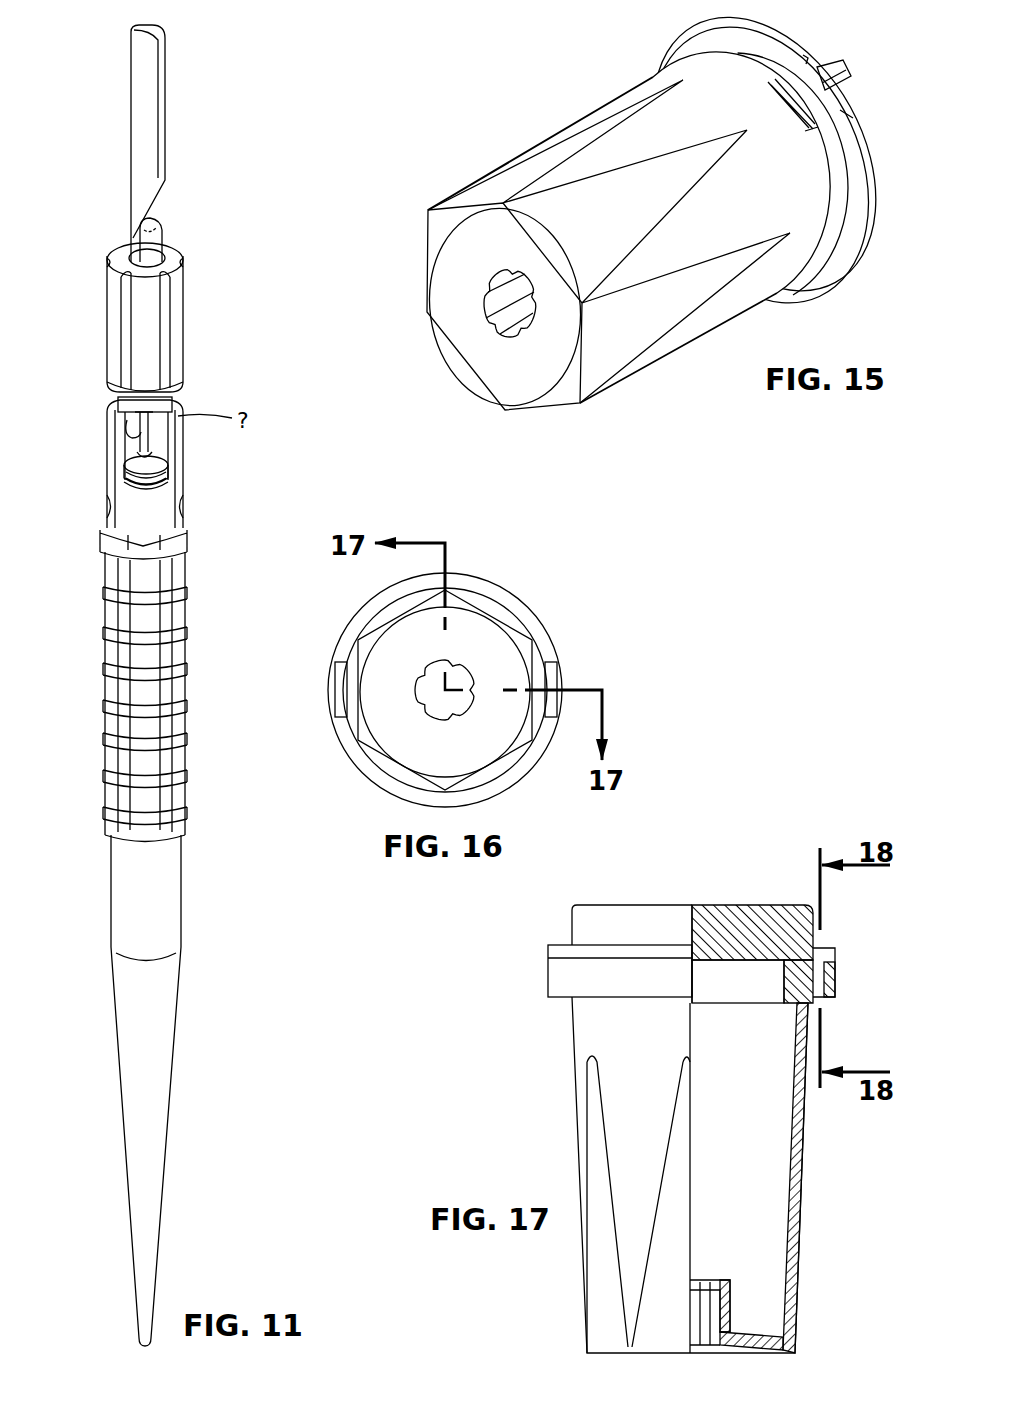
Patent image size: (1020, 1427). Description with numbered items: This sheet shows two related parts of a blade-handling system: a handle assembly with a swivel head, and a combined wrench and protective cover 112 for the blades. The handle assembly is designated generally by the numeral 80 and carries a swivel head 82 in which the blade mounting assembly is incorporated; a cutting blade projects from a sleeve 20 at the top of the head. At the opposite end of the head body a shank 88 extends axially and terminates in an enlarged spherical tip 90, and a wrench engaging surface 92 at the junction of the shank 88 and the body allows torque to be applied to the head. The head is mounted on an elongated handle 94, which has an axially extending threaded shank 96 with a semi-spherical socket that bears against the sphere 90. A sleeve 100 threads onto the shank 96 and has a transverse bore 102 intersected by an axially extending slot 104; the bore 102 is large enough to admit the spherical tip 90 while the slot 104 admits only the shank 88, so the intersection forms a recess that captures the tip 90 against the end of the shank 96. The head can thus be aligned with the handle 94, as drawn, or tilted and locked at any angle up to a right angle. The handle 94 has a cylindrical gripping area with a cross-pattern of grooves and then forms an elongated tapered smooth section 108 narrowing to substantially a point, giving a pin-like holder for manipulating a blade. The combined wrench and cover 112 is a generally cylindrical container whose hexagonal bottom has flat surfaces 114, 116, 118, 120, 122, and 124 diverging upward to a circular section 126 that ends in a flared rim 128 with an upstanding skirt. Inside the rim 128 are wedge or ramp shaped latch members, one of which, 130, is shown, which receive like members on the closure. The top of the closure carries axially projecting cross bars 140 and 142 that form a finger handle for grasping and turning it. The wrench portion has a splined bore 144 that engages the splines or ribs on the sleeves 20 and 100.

In FIG. 11, the sleeve 20 is at (107, 290).
In FIG. 11, the handle assembly 80 is at (197, 775).
In FIG. 11, the swivel head 82 is at (197, 287).
In FIG. 11, the shank 88 is at (150, 440).
In FIG. 11, the spherical tip 90 is at (150, 465).
In FIG. 11, the wrench engaging surface 92 is at (172, 400).
In FIG. 11, the elongated handle 94 is at (110, 632).
In FIG. 11, the threaded shank 96 is at (160, 540).
In FIG. 11, the sleeve 100 is at (110, 448).
In FIG. 11, the transverse bore 102 is at (120, 482).
In FIG. 11, the axially extending slot 104 is at (143, 438).
In FIG. 11, the elongated tapered smooth section 108 is at (160, 1127).
In FIG. 15, the combined wrench and protective cover 112 is at (633, 238).
In FIG. 15, the flat surface 114 is at (515, 172).
In FIG. 17, the flat surface 114 is at (597, 1290).
In FIG. 15, the flat surface 116 is at (428, 232).
In FIG. 15, the flat surface 118 is at (475, 393).
In FIG. 15, the flat surface 120 is at (543, 410).
In FIG. 15, the flat surface 122 is at (665, 315).
In FIG. 15, the flat surface 124 is at (683, 182).
In FIG. 17, the flat surface 124 is at (680, 1238).
In FIG. 15, the circular section 126 is at (703, 80).
In FIG. 17, the circular section 126 is at (580, 1030).
In FIG. 17, the flared rim 128 is at (555, 976).
In FIG. 17, the latch member 130 is at (634, 945).
In FIG. 17, the cross bar 140 is at (690, 905).
In FIG. 17, the cross bar 142 is at (757, 905).
In FIG. 15, the splined bore 144 is at (497, 300).